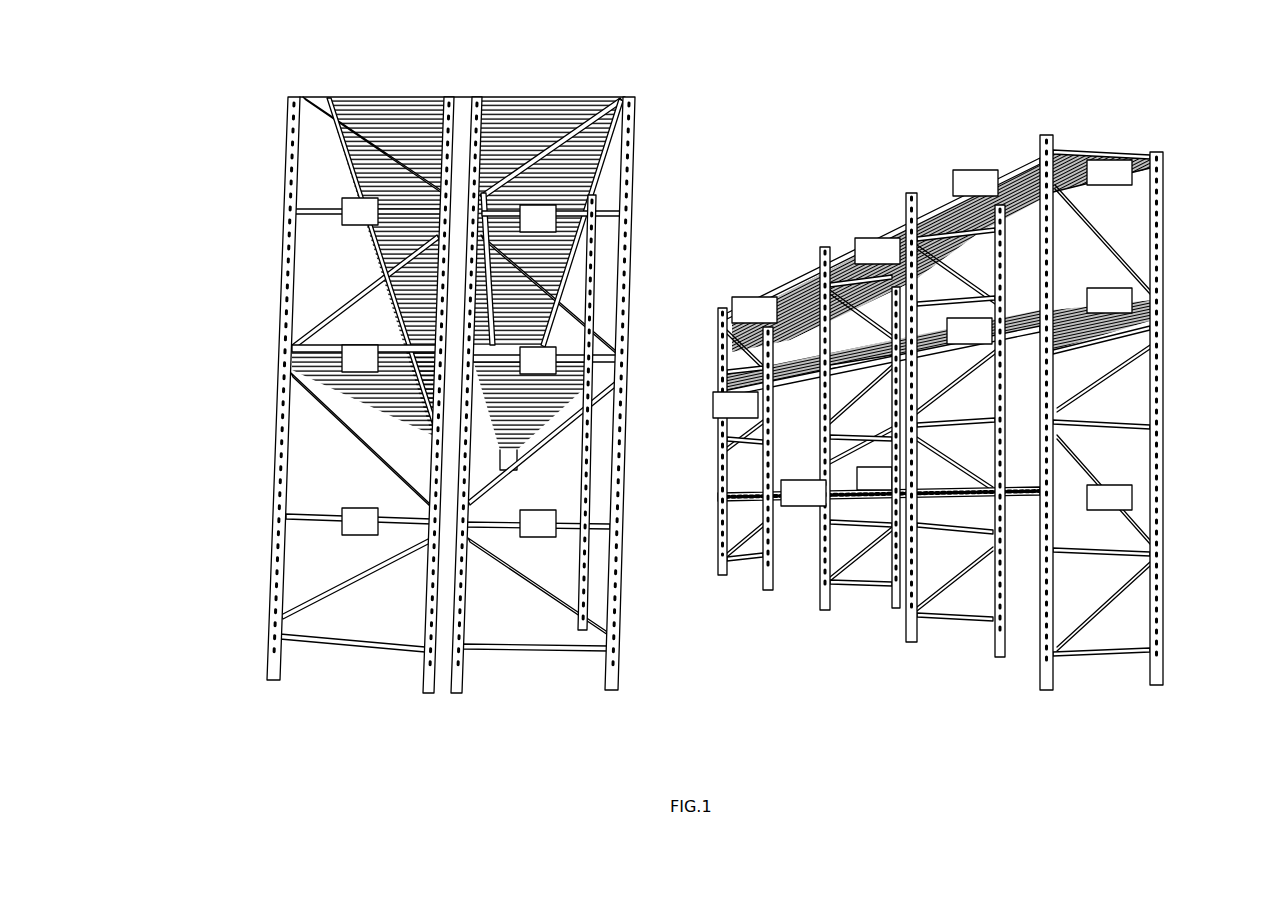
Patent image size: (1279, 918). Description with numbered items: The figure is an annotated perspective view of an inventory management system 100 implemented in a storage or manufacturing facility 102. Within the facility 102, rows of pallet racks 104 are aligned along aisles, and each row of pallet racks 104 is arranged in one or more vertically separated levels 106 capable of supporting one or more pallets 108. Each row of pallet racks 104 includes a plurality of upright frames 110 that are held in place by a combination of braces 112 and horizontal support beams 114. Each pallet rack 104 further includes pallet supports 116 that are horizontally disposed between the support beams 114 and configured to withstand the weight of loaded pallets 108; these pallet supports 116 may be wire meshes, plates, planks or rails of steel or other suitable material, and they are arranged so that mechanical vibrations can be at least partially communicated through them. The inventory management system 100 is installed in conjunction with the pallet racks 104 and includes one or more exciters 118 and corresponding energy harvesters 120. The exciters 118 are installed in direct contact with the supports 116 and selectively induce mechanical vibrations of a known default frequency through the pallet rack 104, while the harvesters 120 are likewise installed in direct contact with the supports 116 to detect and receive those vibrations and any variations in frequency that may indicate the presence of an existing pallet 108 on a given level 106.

The inventory management system 100 is at (810, 39).
The storage or manufacturing facility 102 is at (796, 678).
The pallet rack 104 is at (555, 410).
The level 106 is at (1172, 246).
The pallet 108 is at (878, 484).
The upright frame 110 is at (470, 97).
The brace 112 is at (327, 113).
The horizontal support beam 114 is at (935, 208).
The pallet support 116 is at (410, 97).
The exciter 118 is at (1125, 182).
The energy harvester 120 is at (375, 222).